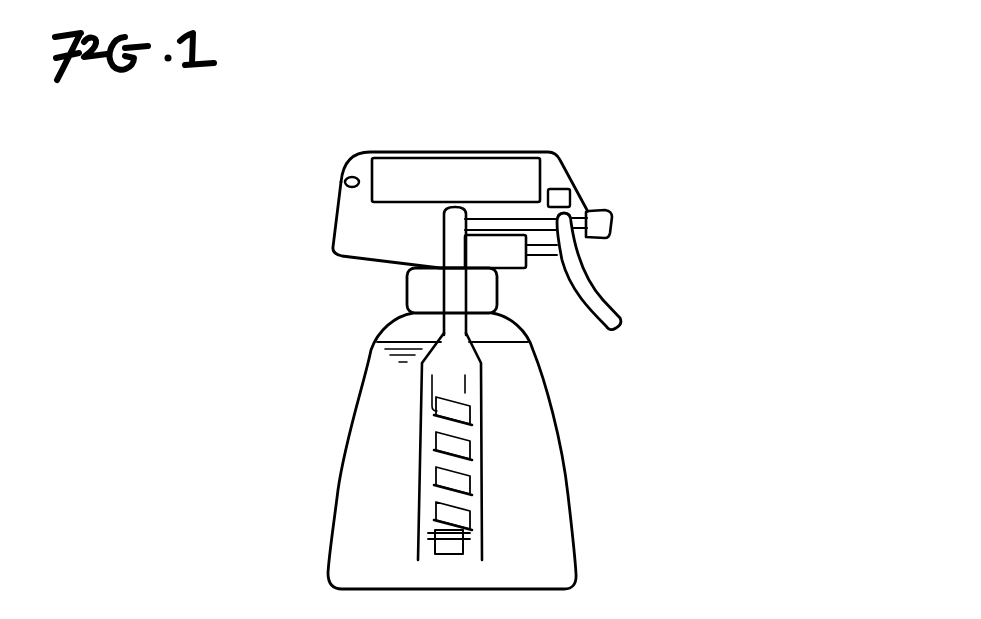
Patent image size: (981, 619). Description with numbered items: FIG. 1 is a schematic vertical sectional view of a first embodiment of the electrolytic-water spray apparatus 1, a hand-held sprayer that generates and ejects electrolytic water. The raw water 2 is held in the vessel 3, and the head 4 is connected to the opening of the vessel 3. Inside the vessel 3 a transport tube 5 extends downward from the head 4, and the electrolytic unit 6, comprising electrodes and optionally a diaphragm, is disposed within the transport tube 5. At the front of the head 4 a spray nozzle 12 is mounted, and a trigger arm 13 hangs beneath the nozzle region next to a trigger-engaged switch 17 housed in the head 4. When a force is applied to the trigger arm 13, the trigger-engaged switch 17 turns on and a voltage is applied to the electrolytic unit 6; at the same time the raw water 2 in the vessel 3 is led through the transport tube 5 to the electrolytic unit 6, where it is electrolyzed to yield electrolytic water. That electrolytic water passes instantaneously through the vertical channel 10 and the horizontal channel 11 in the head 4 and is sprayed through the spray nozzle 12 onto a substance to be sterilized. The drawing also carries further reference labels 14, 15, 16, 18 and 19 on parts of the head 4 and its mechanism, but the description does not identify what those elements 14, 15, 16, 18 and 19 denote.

The electrolytic-water spray apparatus 1 is at (700, 353).
The raw water 2 is at (552, 522).
The vessel 3 is at (569, 477).
The head 4 is at (437, 147).
The transport tube 5 is at (482, 388).
The electrolytic unit 6 is at (428, 457).
The vertical channel 10 is at (458, 245).
The horizontal channel 11 is at (512, 222).
The spray nozzle 12 is at (610, 222).
The trigger arm 13 is at (618, 325).
The nozzle connection 14 is at (575, 205).
The link rod 15 is at (540, 255).
The piston stem 16 is at (446, 217).
The trigger-engaged switch 17 is at (560, 193).
The window 18 is at (497, 250).
The hole 19 is at (345, 180).